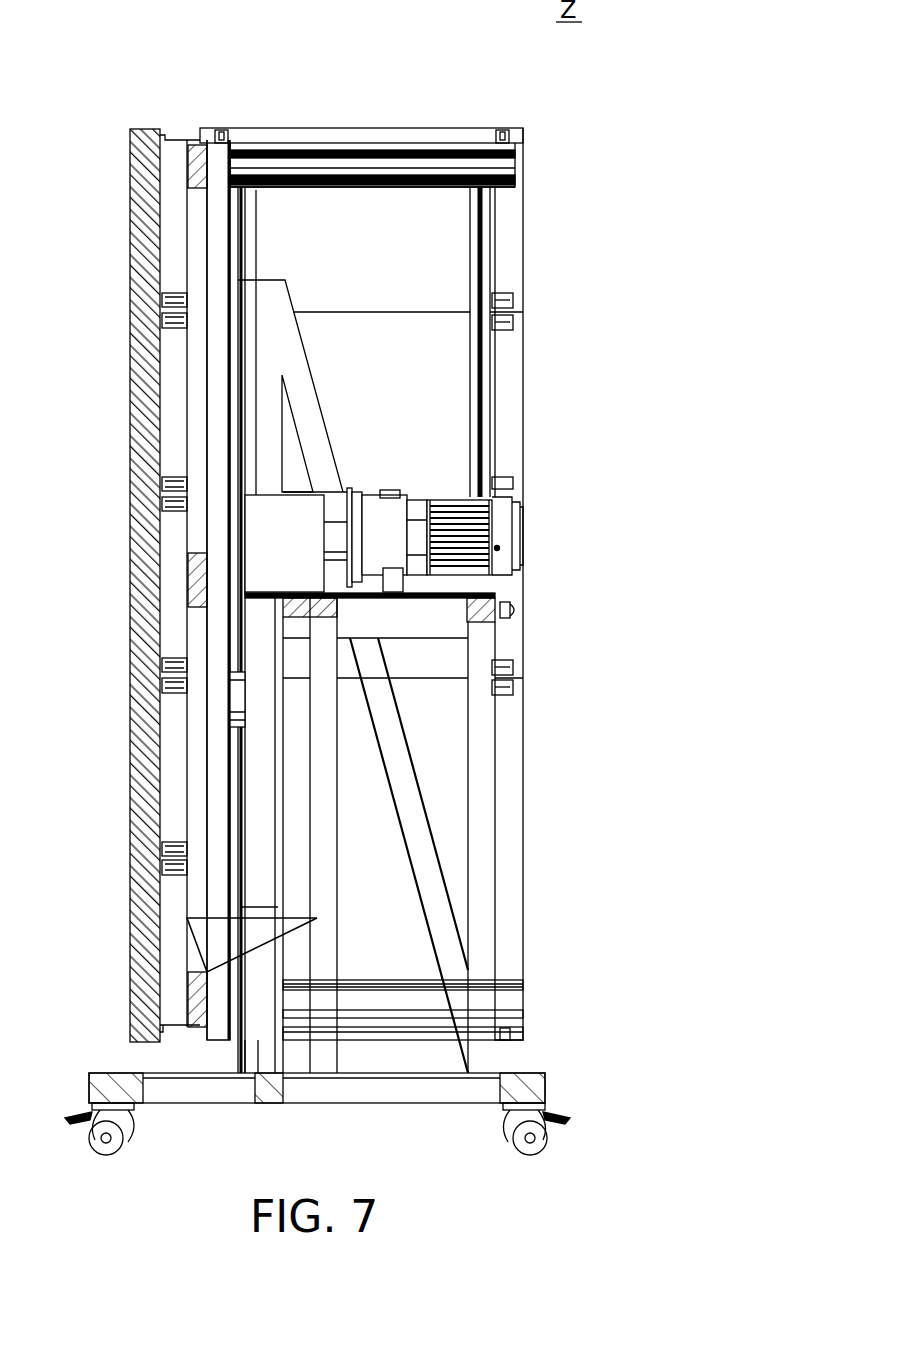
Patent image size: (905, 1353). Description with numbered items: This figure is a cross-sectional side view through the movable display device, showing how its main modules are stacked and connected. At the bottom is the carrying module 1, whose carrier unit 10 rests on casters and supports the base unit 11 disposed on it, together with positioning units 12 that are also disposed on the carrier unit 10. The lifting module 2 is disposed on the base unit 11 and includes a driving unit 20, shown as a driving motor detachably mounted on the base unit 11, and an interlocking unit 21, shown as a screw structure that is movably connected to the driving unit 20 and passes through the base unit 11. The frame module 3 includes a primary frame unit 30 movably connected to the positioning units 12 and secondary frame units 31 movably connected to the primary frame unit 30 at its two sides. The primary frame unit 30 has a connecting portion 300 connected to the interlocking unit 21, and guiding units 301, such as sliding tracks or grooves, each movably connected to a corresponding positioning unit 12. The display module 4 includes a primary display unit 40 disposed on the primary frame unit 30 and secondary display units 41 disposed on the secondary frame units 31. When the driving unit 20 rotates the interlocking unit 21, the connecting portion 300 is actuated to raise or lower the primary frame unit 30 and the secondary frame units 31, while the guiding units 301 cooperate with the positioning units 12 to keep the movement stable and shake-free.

The carrying module 1 is at (622, 715).
The carrier unit 10 is at (542, 1073).
The base unit 11 is at (423, 600).
The positioning unit 12 is at (443, 912).
The lifting module 2 is at (77, 447).
The driving unit 20 is at (392, 498).
The interlocking unit 21 is at (257, 628).
The frame module 3 is at (82, 175).
The primary frame unit 30 is at (192, 167).
The secondary frame unit 31 is at (281, 187).
The connecting portion 300 is at (207, 940).
The guiding unit 301 is at (222, 757).
The display module 4 is at (268, 60).
The primary display unit 40 is at (147, 128).
The secondary display unit 41 is at (268, 128).